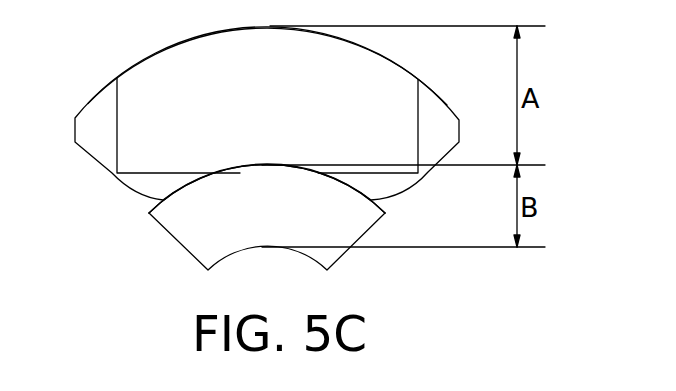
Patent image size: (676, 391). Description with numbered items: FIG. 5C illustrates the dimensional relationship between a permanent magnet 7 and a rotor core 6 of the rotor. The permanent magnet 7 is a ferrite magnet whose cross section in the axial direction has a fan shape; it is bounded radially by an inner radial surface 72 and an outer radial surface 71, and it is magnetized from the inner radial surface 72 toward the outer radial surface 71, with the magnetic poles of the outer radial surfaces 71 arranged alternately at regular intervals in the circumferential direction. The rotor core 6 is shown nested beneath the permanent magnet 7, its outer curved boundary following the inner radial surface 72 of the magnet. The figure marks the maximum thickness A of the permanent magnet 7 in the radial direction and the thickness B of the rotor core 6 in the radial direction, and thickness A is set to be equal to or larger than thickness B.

The rotor core 6 is at (195, 232).
The permanent magnet 7 is at (137, 148).
The outer radial surface 71 is at (142, 60).
The inner radial surface 72 is at (243, 167).